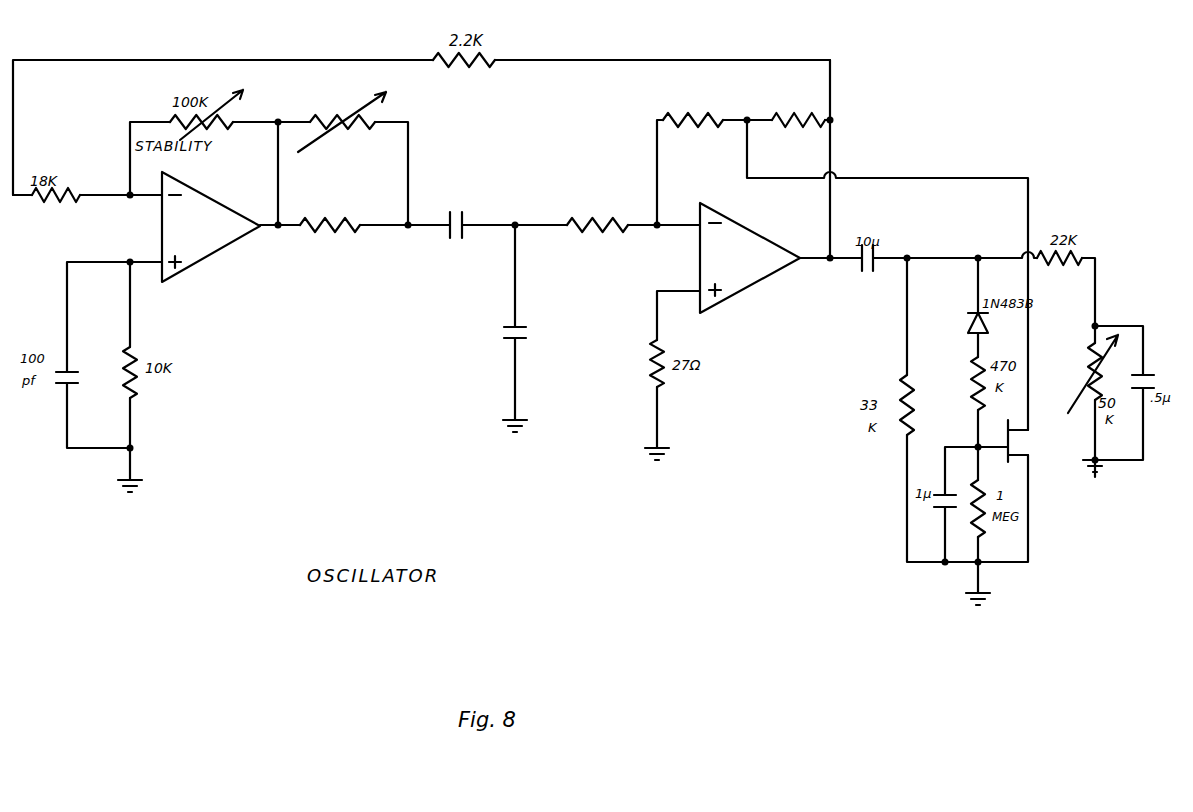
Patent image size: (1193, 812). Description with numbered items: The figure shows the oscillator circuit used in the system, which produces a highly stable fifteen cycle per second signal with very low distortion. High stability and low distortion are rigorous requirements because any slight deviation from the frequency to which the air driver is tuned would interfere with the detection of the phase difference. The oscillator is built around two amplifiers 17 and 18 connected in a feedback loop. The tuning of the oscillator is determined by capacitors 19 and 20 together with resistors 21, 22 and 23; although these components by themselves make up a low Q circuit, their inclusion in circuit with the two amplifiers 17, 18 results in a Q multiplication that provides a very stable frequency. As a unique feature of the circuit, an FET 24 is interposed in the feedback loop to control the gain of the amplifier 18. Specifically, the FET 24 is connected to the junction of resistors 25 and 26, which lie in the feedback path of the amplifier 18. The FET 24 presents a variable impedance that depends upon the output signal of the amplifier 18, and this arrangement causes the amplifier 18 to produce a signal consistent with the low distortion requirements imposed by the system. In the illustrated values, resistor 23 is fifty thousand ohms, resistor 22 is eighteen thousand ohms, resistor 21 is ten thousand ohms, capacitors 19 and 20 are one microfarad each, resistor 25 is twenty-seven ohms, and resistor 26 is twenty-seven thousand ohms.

The amplifier 17 is at (211, 227).
The amplifier 18 is at (750, 258).
The capacitor 19 is at (447, 242).
The capacitor 20 is at (505, 340).
The resistor 21 is at (592, 240).
The resistor 22 is at (327, 238).
The resistor 23 is at (380, 112).
The FET (field effect transistor) 24 is at (1011, 447).
The resistor 25 is at (688, 130).
The resistor 26 is at (800, 128).